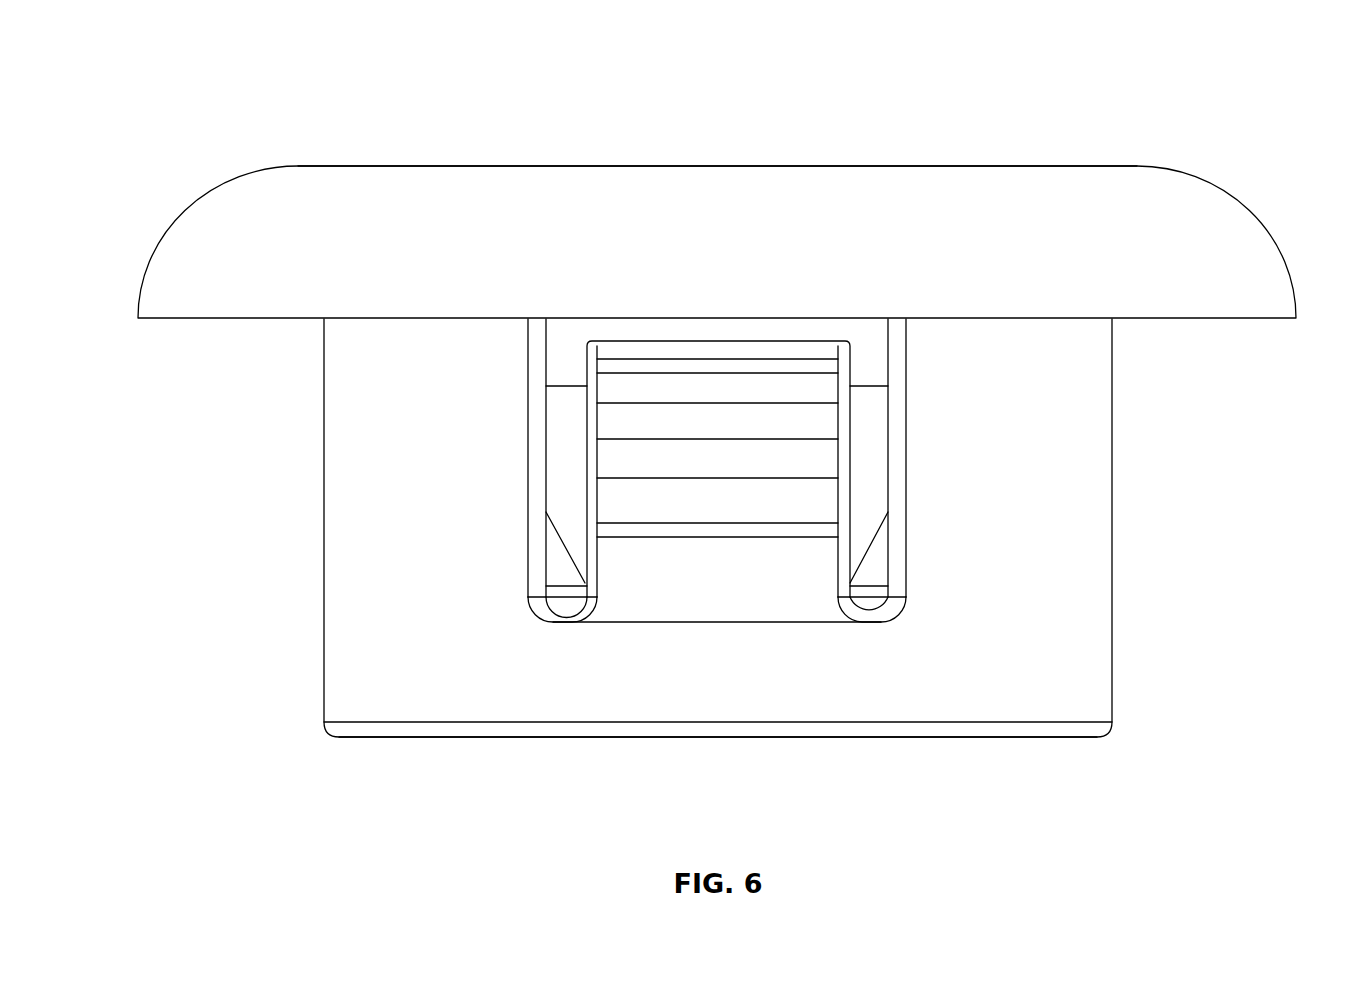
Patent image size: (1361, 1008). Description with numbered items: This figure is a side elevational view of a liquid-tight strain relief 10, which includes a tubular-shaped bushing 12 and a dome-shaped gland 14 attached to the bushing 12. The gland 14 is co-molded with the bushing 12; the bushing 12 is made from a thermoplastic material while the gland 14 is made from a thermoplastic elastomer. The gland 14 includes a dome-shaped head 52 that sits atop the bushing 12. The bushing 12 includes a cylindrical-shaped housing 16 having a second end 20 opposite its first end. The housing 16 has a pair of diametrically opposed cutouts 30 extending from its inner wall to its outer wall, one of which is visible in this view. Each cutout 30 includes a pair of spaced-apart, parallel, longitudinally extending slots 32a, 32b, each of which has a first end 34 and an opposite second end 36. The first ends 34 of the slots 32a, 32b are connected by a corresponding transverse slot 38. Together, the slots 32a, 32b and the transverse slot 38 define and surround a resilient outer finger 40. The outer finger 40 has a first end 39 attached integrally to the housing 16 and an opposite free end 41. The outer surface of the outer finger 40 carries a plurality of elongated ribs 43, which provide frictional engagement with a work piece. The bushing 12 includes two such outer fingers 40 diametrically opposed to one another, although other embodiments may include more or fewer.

The liquid-tight strain relief 10 is at (146, 86).
The bushing 12 is at (1092, 628).
The gland 14 is at (1268, 280).
The housing 16 is at (357, 685).
The second end 20 is at (367, 738).
The cutout 30 is at (527, 575).
The slot 32a is at (568, 483).
The slot 32b is at (875, 480).
The first end 34 is at (587, 341).
The second end 36 is at (567, 627).
The transverse slot 38 is at (627, 329).
The first end 39 is at (650, 625).
The outer finger 40 is at (734, 454).
The free end 41 is at (757, 330).
The elongated ribs 43 is at (757, 440).
The head 52 is at (190, 257).